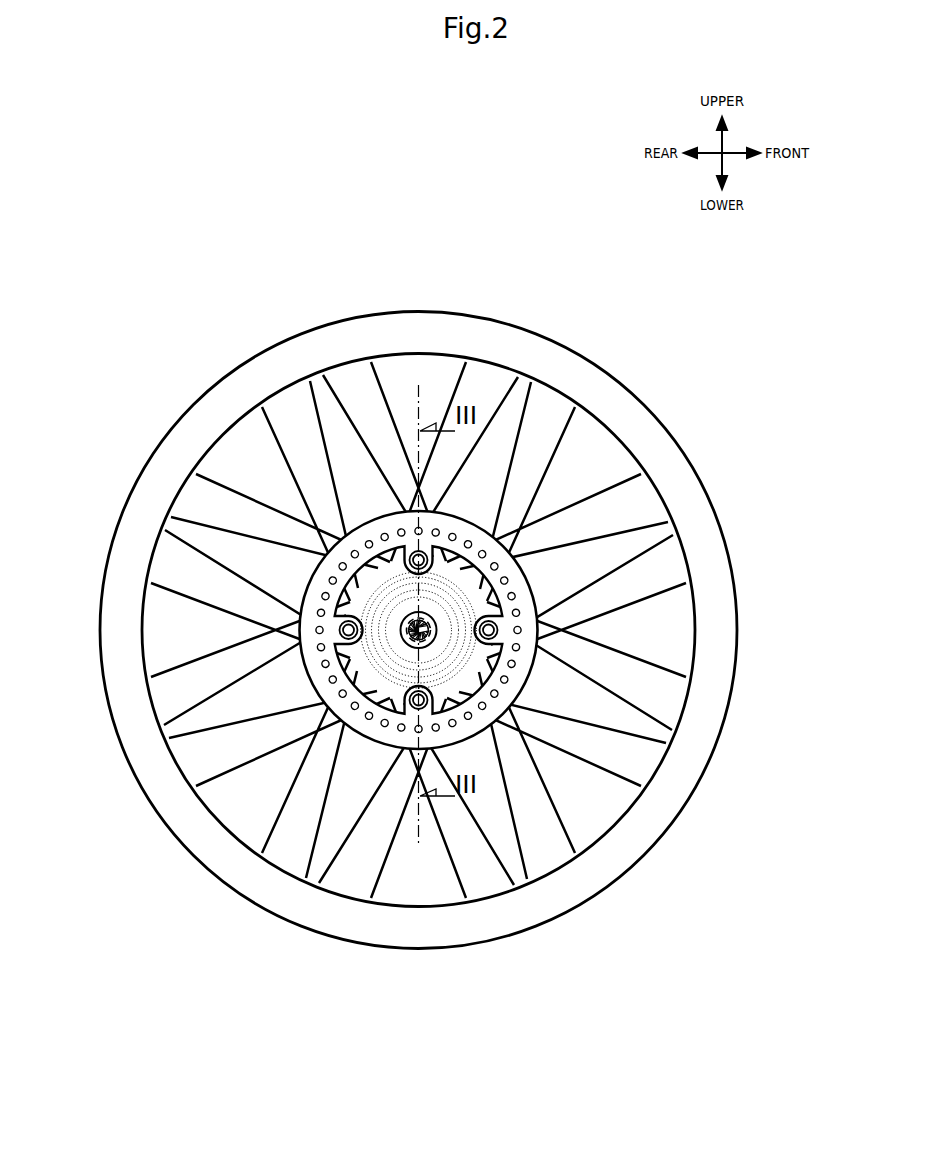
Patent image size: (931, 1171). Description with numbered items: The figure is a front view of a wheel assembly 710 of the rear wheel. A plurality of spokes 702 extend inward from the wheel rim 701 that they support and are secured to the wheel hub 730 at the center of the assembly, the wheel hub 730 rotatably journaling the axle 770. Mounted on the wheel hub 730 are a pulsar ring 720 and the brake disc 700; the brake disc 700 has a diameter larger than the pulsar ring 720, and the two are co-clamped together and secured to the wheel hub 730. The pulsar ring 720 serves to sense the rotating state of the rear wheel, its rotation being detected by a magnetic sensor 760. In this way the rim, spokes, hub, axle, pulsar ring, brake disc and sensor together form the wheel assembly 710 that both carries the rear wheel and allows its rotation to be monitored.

The brake disc 700 is at (437, 628).
The wheel rim 701 is at (677, 468).
The spokes 702 is at (622, 585).
The wheel assembly 710 is at (623, 343).
The pulsar ring 720 is at (496, 636).
The wheel hub 730 is at (503, 688).
The magnetic sensor 760 is at (362, 585).
The axle 770 is at (405, 640).